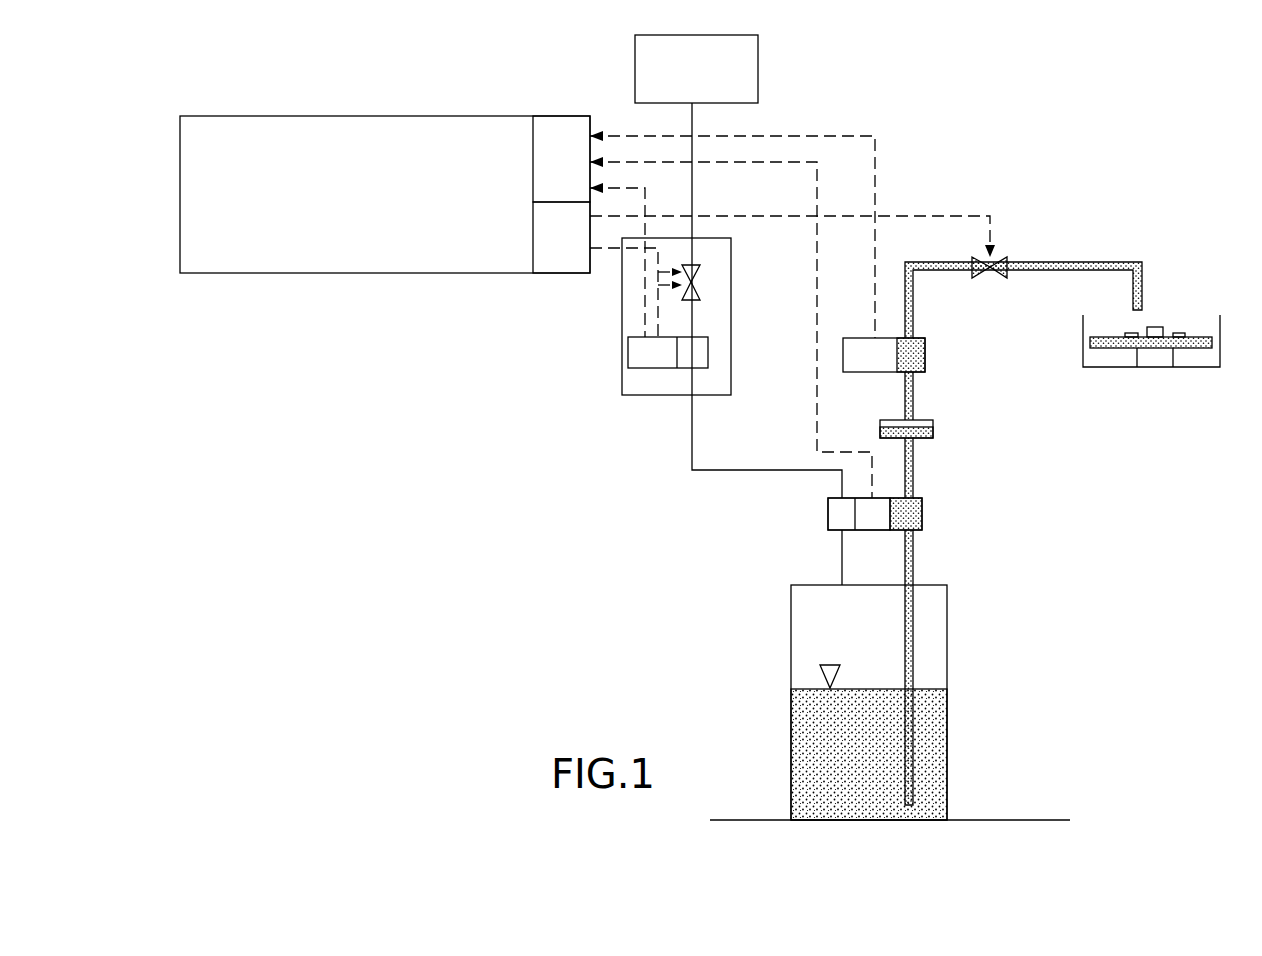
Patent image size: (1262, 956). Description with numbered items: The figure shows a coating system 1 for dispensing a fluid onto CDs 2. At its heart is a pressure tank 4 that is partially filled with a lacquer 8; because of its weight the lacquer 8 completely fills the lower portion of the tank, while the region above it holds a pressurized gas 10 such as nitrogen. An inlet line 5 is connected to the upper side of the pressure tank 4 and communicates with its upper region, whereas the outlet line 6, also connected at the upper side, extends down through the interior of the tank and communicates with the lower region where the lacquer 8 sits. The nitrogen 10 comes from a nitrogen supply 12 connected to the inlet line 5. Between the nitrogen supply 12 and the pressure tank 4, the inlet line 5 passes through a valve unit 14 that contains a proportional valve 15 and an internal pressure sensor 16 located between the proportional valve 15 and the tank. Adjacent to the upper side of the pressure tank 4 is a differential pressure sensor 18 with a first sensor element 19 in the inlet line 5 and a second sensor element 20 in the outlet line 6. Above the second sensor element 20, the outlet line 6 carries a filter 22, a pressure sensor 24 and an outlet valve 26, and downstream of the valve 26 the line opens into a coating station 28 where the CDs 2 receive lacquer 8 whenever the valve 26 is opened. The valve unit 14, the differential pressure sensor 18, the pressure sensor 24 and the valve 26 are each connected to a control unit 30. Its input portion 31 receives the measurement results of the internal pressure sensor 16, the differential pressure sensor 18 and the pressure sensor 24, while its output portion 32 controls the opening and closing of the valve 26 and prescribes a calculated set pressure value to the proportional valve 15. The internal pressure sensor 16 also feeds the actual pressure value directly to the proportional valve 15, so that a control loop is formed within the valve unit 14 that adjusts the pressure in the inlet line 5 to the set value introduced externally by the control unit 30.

The coating system 1 is at (518, 494).
The CDs 2 is at (1195, 349).
The pressure tank 4 is at (955, 710).
The inlet line 5 is at (708, 472).
The outlet line 6 is at (913, 553).
The lacquer 8 is at (800, 750).
The pressurized gas 10 is at (803, 632).
The nitrogen supply 12 is at (768, 66).
The valve unit 14 is at (738, 260).
The proportional valve 15 is at (701, 290).
The internal pressure sensor 16 is at (708, 351).
The differential pressure sensor 18 is at (862, 538).
The first sensor element 19 is at (828, 508).
The second sensor element 20 is at (922, 511).
The filter 22 is at (933, 433).
The pressure sensor 24 is at (925, 356).
The outlet valve 26 is at (1007, 262).
The coating station 28 is at (1230, 310).
The control unit 30 is at (452, 100).
The input portion 31 is at (562, 122).
The output portion 32 is at (560, 265).